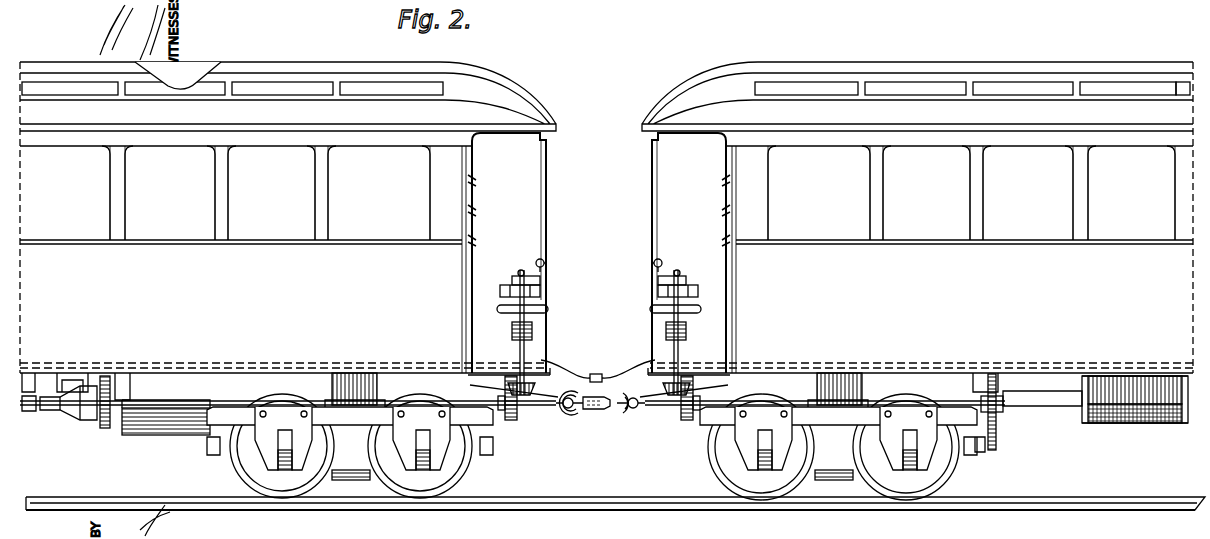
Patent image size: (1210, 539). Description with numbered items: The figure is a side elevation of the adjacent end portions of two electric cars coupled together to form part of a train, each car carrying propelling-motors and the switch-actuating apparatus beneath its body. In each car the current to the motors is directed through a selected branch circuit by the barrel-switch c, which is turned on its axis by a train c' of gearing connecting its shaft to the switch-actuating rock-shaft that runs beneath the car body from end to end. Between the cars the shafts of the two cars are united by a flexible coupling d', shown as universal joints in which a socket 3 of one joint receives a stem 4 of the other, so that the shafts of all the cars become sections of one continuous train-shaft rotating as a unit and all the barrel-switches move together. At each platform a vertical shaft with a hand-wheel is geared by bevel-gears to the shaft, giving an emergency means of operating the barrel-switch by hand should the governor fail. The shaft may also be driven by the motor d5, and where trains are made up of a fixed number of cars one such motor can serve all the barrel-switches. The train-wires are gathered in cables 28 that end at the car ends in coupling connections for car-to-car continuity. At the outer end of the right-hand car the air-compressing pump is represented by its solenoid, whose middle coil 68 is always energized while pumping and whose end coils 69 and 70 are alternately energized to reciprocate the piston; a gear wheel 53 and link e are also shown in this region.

The barrel-switch c is at (166, 426).
The train of gearing c' is at (104, 413).
The flexible coupling d' is at (592, 431).
The motor d5 is at (80, 416).
The coupling link e is at (598, 423).
The socket 3 is at (603, 412).
The stem 4 is at (590, 410).
The cable 28 is at (570, 366).
The gear wheel 53 is at (997, 435).
The end coil 69 is at (1135, 410).
The middle coil 68 is at (1135, 410).
The end coil 70 is at (1135, 410).